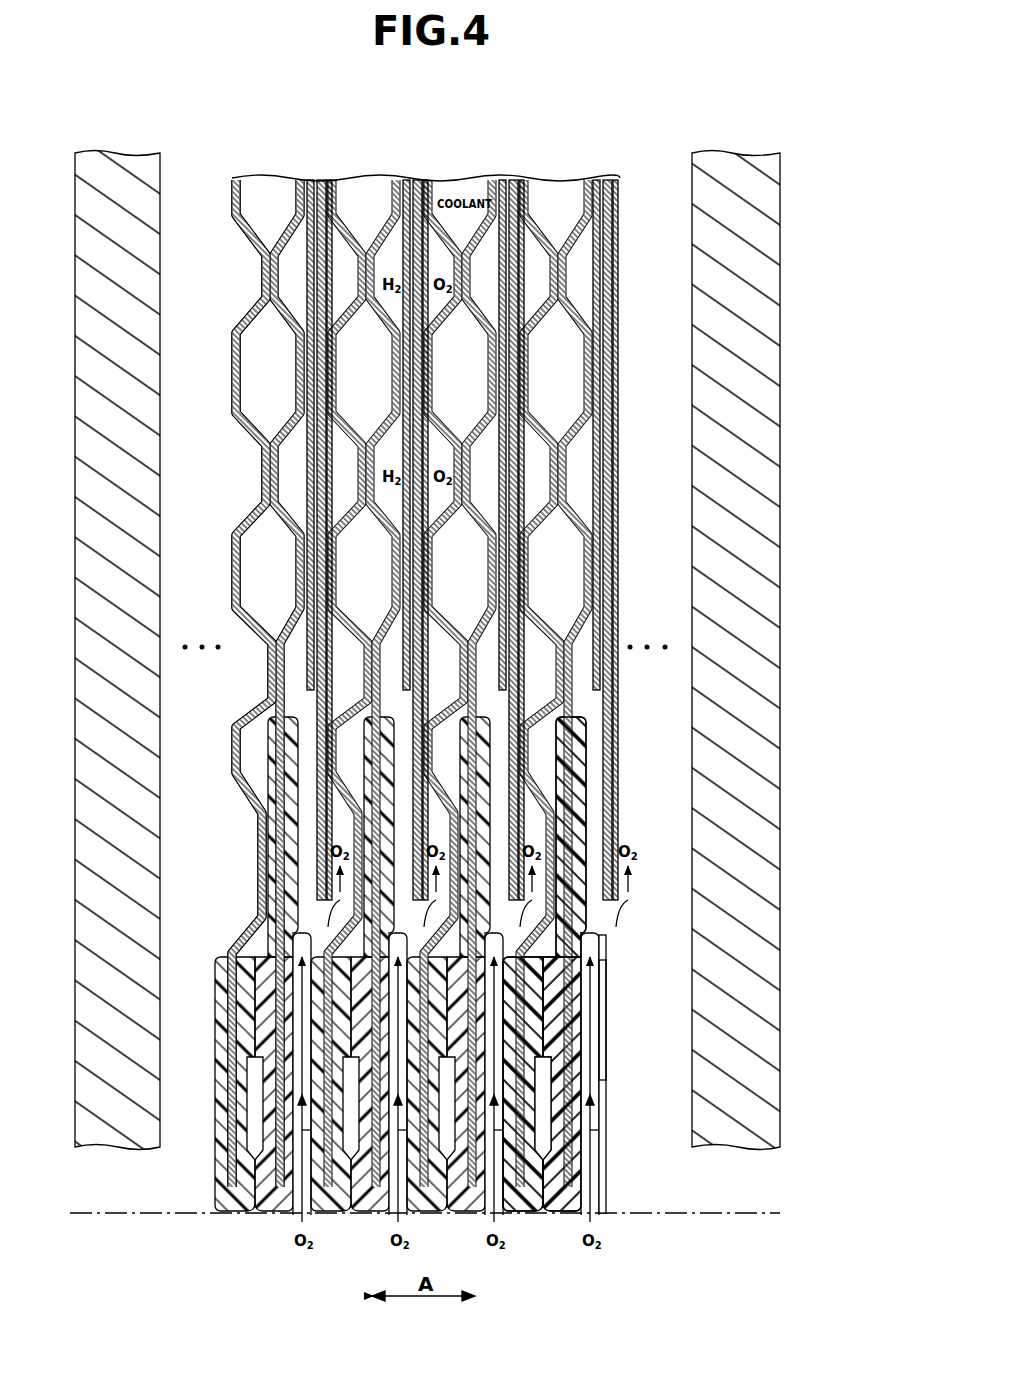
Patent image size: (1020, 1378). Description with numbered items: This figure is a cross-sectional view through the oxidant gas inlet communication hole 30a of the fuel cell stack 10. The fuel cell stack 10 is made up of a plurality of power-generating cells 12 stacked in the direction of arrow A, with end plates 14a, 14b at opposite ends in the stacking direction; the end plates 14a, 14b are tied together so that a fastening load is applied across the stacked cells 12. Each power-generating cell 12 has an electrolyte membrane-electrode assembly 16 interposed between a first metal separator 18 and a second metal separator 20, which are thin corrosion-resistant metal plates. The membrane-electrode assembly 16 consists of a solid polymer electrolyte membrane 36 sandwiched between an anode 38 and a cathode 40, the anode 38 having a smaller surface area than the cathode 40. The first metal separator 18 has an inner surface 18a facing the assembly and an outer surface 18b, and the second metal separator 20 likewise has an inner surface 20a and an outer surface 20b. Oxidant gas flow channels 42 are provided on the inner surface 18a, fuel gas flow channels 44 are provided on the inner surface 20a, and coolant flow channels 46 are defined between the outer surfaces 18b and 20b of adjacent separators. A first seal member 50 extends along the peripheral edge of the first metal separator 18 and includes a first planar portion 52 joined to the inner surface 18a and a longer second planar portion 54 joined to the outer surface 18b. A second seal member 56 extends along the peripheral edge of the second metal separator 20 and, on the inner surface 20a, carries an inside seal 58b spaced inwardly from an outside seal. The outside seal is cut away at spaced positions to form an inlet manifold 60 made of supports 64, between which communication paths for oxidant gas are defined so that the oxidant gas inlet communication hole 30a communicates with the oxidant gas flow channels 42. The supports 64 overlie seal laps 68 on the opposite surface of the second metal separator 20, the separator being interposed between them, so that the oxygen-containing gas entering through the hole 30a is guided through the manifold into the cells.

The fuel cell stack 10 is at (212, 107).
The power-generating cell 12 is at (507, 168).
The end plate 14a is at (118, 1123).
The end plate 14b is at (740, 1123).
The electrolyte membrane-electrode assembly 16 is at (320, 489).
The first metal separator 18 is at (346, 197).
The inner surface of first metal separator 18a is at (300, 360).
The outer surface of first metal separator 18b is at (347, 360).
The second metal separator 20 is at (294, 198).
The inner surface of second metal separator 20a is at (300, 400).
The outer surface of second metal separator 20b is at (300, 390).
The solid polymer electrolyte membrane 36 is at (319, 172).
The anode 38 is at (308, 172).
The cathode 40 is at (348, 509).
The oxidant gas flow channels 42 is at (340, 280).
The fuel gas flow channels 44 is at (293, 279).
The coolant flow channels 46 is at (560, 378).
The first seal member 50 is at (213, 1080).
The first planar portion 52 is at (512, 1118).
The second planar portion 54 is at (535, 1072).
The second seal member 56 is at (569, 1220).
The inside seal 58b is at (596, 818).
The inlet manifold 60 is at (611, 983).
The supports 64 is at (598, 1018).
The seal laps 68 is at (247, 1010).
The oxidant gas inlet communication hole 30a is at (630, 1215).